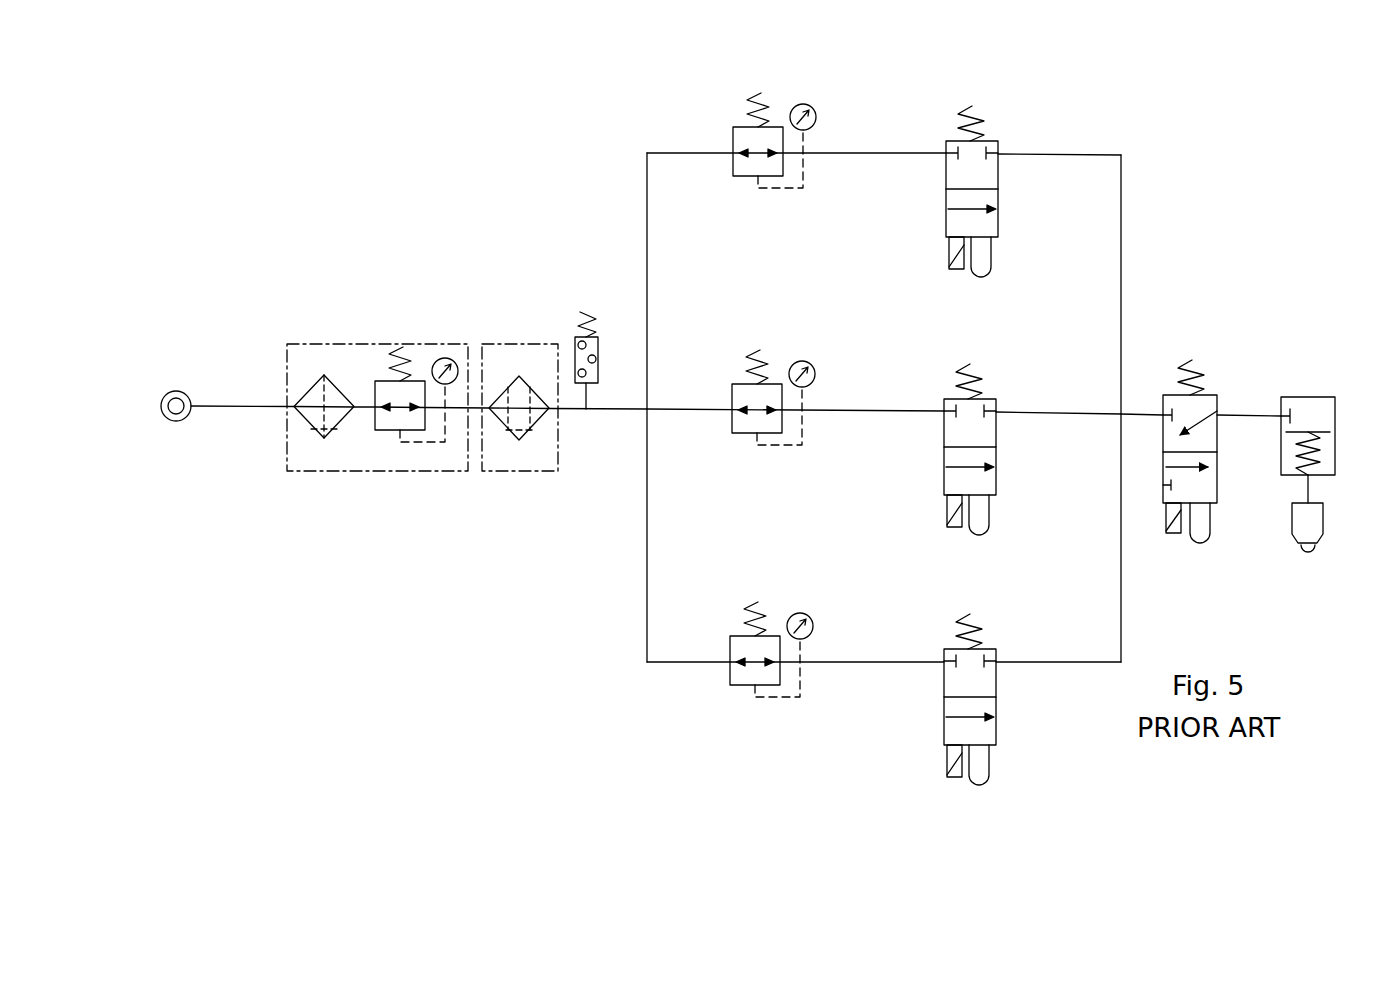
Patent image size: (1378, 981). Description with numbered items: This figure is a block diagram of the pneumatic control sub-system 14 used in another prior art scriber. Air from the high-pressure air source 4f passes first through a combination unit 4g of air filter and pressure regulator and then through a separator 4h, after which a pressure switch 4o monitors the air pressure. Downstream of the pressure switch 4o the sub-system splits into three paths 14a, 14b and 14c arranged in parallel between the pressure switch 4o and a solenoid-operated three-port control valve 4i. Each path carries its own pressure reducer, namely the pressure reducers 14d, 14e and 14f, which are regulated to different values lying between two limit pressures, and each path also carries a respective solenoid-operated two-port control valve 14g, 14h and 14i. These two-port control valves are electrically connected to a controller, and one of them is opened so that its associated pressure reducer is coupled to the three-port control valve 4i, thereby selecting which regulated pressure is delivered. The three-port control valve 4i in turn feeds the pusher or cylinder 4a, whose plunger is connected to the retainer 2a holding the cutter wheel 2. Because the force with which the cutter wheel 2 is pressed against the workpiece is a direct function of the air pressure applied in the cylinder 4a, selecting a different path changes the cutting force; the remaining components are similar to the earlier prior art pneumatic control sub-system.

The cutter wheel 2 is at (1310, 558).
The retainer 2a is at (1325, 522).
The cylinder 4a is at (1335, 405).
The high-pressure air source 4f is at (182, 389).
The combination unit of air filter and pressure regulator 4g is at (350, 344).
The separator 4h is at (518, 344).
The pressure switch 4o is at (598, 346).
The solenoid-operated three-port valve 4i is at (1218, 405).
The pneumatic control sub-system 14 is at (1150, 108).
The first path 14a is at (1058, 143).
The second path 14b is at (1030, 385).
The third path 14c is at (1033, 656).
The pressure reducer 14d is at (733, 140).
The pressure reducer 14e is at (732, 396).
The pressure reducer 14f is at (730, 650).
The solenoid-operated two-port control valve 14g is at (946, 197).
The solenoid-operated two-port control valve 14h is at (944, 453).
The solenoid-operated two-port control valve 14i is at (944, 722).